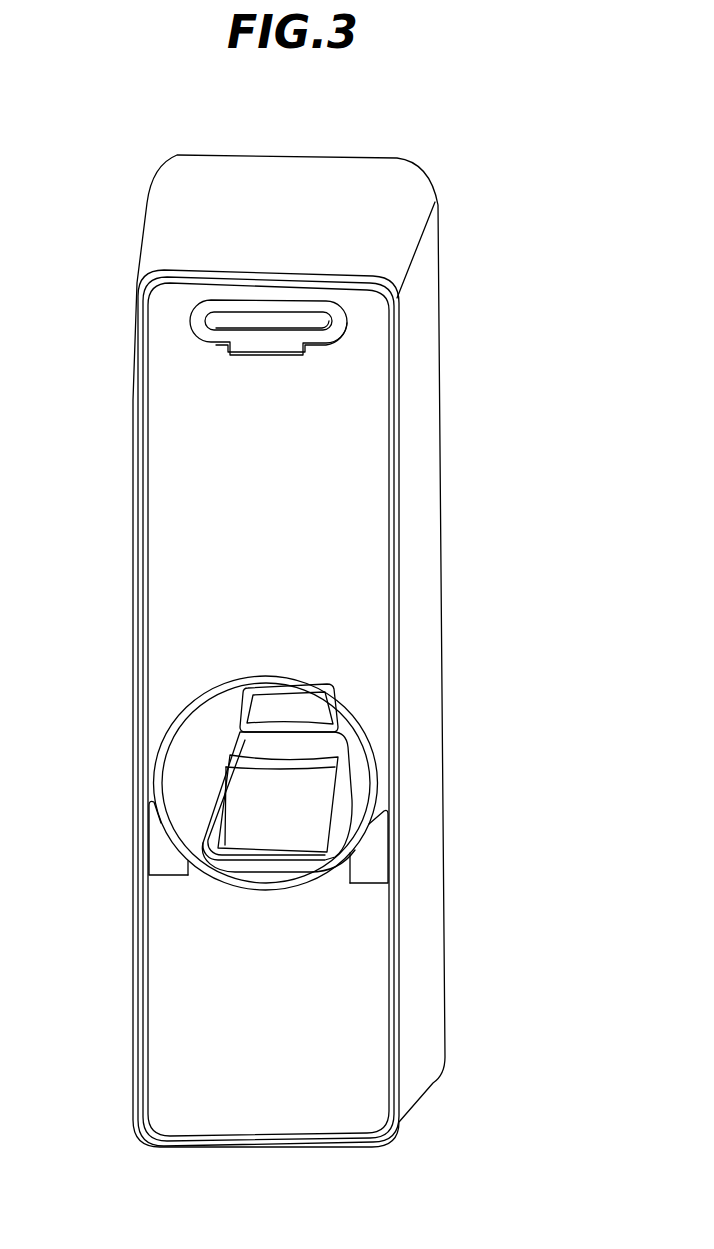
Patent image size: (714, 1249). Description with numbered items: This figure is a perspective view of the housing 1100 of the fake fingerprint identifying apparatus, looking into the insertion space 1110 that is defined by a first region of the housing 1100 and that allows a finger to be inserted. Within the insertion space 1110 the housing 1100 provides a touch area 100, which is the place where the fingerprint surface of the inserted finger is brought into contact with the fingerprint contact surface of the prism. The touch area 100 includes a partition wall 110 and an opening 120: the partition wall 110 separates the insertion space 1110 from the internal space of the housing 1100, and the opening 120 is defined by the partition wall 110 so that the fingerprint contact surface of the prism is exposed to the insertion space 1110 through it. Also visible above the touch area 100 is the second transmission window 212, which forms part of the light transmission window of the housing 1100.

The housing 1100 is at (417, 618).
The insertion space 1110 is at (193, 762).
The second transmission window 212 is at (300, 707).
The touch area 100 is at (407, 802).
The partition wall 110 is at (337, 818).
The opening 120 is at (312, 795).